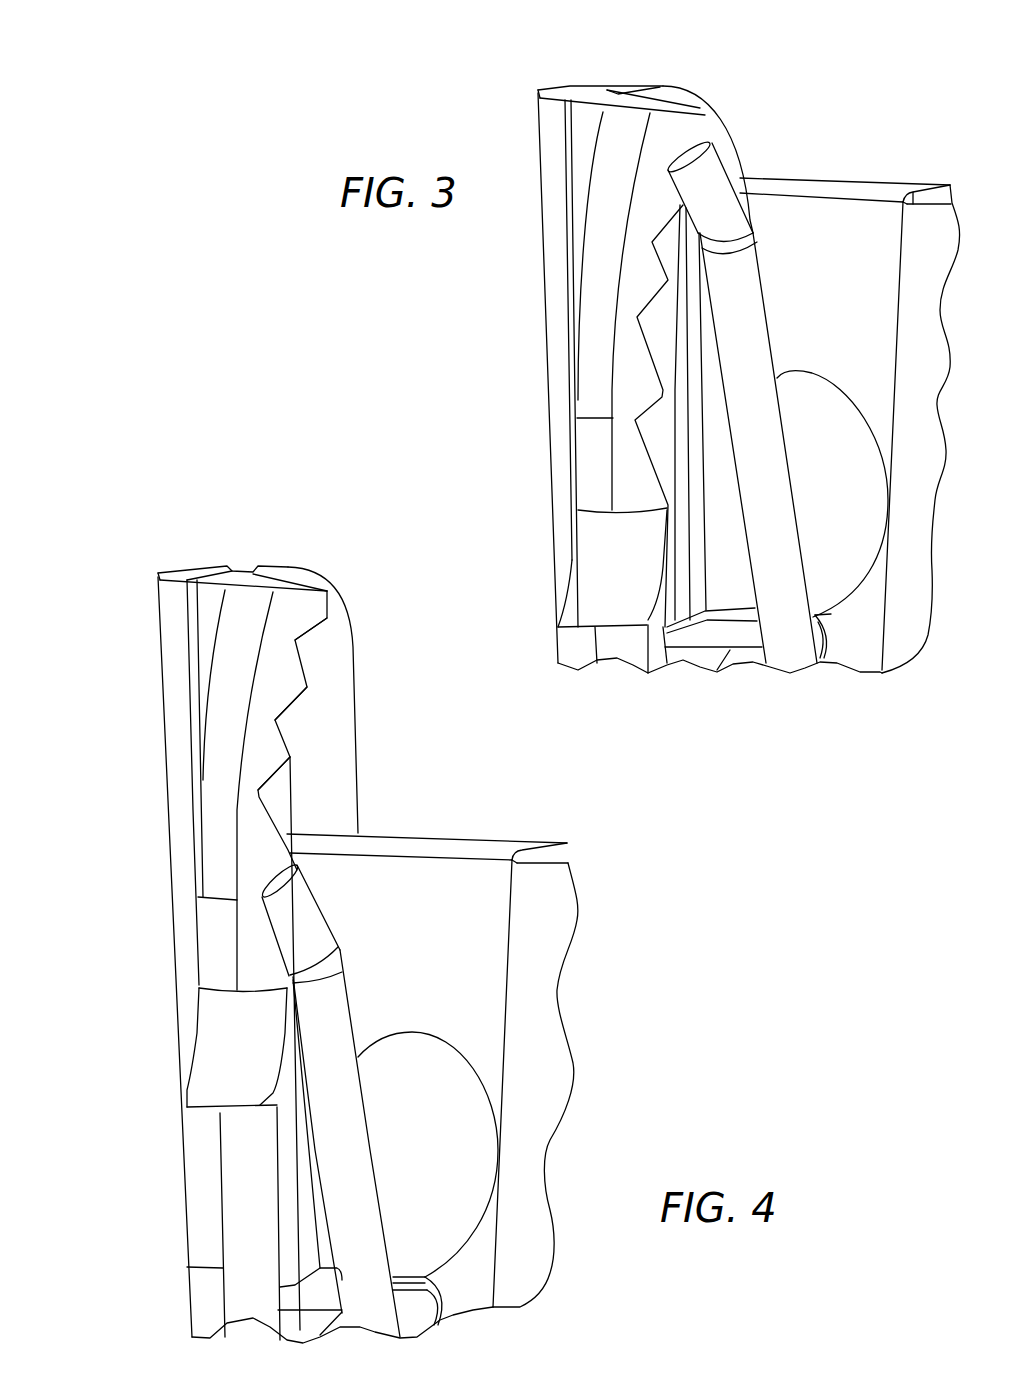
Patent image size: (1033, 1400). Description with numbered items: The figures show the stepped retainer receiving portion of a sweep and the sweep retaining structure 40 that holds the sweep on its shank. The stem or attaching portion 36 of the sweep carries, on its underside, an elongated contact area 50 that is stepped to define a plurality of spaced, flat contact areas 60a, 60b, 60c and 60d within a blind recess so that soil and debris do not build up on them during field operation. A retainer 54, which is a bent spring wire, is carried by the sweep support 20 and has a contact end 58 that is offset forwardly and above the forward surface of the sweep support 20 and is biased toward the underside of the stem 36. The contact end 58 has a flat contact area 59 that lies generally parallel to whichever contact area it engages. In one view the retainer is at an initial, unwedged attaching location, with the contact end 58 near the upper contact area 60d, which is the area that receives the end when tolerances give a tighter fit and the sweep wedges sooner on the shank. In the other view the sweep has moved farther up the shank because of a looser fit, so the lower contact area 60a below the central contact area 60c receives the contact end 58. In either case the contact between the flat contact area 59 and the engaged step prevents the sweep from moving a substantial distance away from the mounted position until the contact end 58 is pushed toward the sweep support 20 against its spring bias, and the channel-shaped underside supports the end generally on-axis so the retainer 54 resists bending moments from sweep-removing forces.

In FIG. 3, the sweep support 20 is at (925, 230).
In FIG. 4, the sweep support 20 is at (563, 900).
In FIG. 3, the stem or attaching portion 36 is at (543, 130).
In FIG. 4, the stem or attaching portion 36 is at (172, 678).
In FIG. 3, the sweep retaining structure 40 is at (508, 322).
In FIG. 4, the sweep retaining structure 40 is at (135, 752).
In FIG. 3, the elongated contact area 50 is at (653, 343).
In FIG. 4, the elongated contact area 50 is at (298, 748).
In FIG. 3, the retainer 54 is at (753, 267).
In FIG. 4, the retainer 54 is at (333, 1007).
In FIG. 3, the contact end 58 is at (727, 193).
In FIG. 4, the contact end 58 is at (310, 917).
In FIG. 3, the flat contact area 59 is at (703, 147).
In FIG. 4, the flat contact area 59 is at (298, 877).
In FIG. 4, the contact area 60a is at (295, 878).
In FIG. 4, the contact area 60b is at (270, 781).
In FIG. 4, the central contact area 60c is at (285, 710).
In FIG. 3, the contact area 60d is at (705, 147).
In FIG. 4, the contact area 60d is at (302, 637).